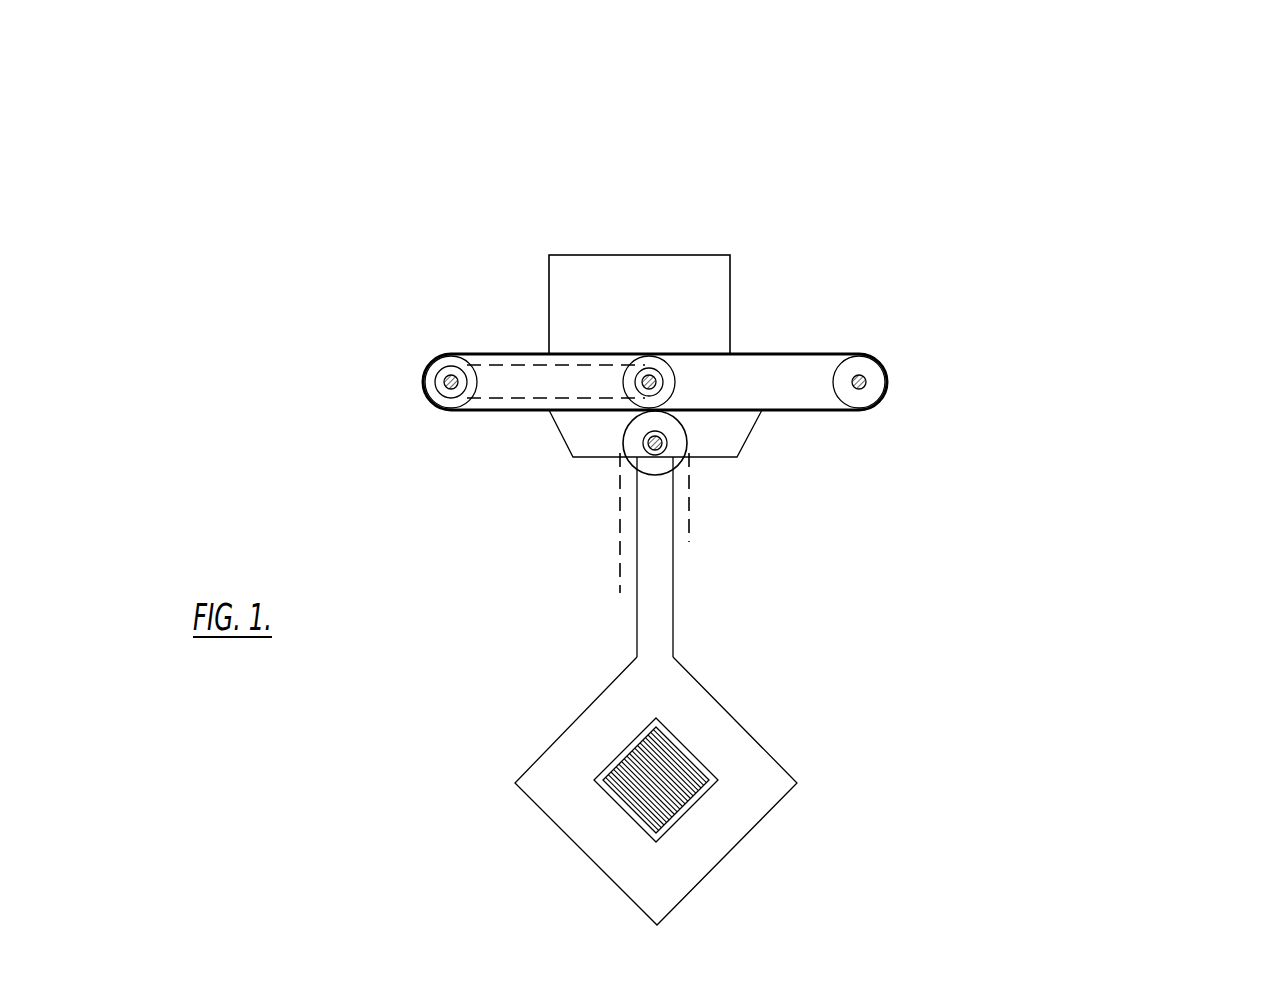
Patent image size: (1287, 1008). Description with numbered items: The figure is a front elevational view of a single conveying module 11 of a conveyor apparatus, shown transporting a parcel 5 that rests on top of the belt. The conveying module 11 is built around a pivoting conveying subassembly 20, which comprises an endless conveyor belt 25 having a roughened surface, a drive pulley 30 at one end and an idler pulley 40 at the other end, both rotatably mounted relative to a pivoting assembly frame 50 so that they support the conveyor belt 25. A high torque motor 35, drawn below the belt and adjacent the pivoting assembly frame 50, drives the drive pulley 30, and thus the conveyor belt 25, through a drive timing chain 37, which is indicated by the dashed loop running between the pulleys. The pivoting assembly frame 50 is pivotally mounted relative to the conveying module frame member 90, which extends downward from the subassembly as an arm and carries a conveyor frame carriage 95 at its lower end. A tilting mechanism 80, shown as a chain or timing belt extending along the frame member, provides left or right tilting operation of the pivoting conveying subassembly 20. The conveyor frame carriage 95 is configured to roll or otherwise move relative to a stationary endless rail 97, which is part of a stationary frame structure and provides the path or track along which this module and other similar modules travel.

The conveying module 11 is at (1037, 145).
The parcel 5 is at (639, 304).
The pivoting conveying subassembly 20 is at (493, 398).
The conveyor belt 25 is at (815, 353).
The drive pulley 30 is at (452, 354).
The high torque motor 35 is at (663, 387).
The drive timing chain 37 is at (488, 363).
The idler pulley 40 is at (875, 372).
The pivoting assembly frame 50 is at (585, 447).
The tilting mechanism 80 is at (690, 500).
The conveying module frame member 90 is at (637, 615).
The conveyor frame carriage 95 is at (725, 818).
The stationary endless rail 97 is at (653, 787).